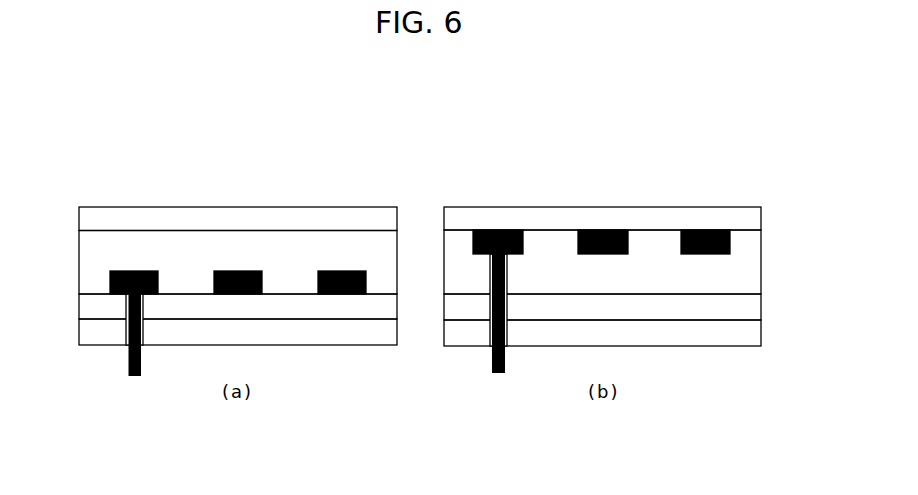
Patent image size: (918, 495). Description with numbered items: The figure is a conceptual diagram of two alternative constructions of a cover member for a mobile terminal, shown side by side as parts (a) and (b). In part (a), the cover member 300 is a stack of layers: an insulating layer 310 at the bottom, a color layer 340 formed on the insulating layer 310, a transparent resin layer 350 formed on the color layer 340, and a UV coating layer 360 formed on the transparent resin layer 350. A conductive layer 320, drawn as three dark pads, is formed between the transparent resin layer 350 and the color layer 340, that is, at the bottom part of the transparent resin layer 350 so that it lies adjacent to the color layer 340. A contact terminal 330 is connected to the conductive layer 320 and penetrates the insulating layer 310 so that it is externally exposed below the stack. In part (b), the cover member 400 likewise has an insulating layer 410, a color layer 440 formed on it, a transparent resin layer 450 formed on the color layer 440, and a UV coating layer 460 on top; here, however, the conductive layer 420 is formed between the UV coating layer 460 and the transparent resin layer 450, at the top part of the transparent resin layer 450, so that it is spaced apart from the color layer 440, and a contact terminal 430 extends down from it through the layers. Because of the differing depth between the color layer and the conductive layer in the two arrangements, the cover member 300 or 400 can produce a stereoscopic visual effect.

The cover member 300 is at (100, 166).
The insulating layer 310 is at (105, 335).
The conductive layer 320 is at (343, 271).
The contact terminal 330 is at (135, 376).
The color layer 340 is at (105, 308).
The transparent resin layer 350 is at (105, 263).
The UV coating layer 360 is at (105, 219).
The cover member 400 is at (462, 167).
The insulating layer 410 is at (755, 334).
The conductive layer 420 is at (705, 230).
The contact terminal 430 is at (498, 374).
The color layer 440 is at (755, 308).
The transparent resin layer 450 is at (755, 262).
The UV coating layer 460 is at (755, 219).